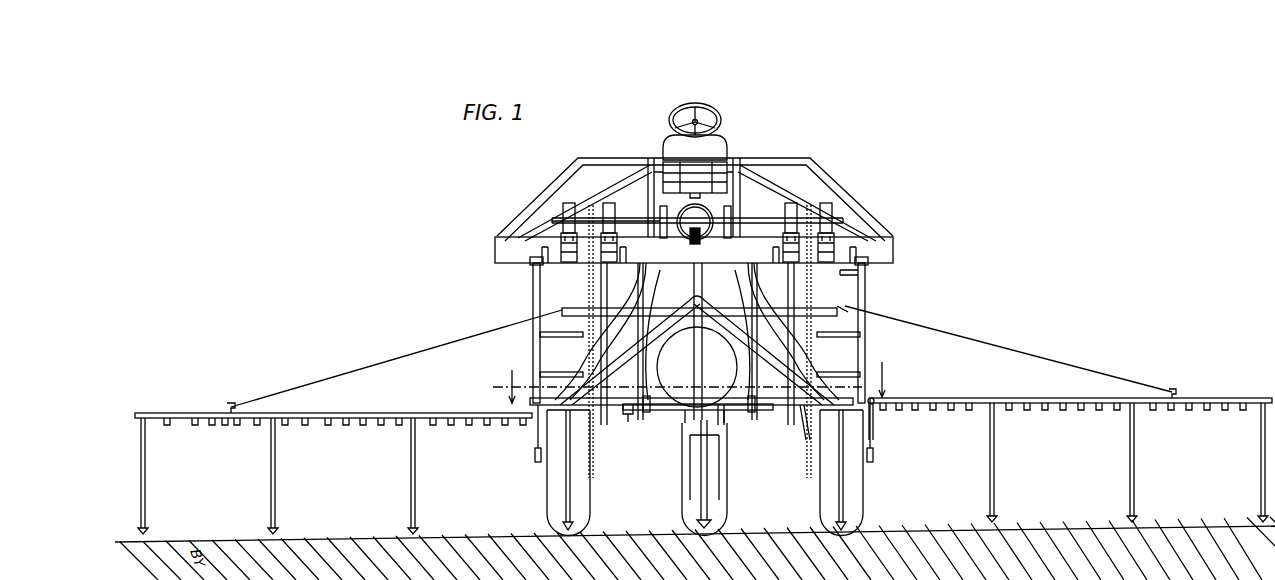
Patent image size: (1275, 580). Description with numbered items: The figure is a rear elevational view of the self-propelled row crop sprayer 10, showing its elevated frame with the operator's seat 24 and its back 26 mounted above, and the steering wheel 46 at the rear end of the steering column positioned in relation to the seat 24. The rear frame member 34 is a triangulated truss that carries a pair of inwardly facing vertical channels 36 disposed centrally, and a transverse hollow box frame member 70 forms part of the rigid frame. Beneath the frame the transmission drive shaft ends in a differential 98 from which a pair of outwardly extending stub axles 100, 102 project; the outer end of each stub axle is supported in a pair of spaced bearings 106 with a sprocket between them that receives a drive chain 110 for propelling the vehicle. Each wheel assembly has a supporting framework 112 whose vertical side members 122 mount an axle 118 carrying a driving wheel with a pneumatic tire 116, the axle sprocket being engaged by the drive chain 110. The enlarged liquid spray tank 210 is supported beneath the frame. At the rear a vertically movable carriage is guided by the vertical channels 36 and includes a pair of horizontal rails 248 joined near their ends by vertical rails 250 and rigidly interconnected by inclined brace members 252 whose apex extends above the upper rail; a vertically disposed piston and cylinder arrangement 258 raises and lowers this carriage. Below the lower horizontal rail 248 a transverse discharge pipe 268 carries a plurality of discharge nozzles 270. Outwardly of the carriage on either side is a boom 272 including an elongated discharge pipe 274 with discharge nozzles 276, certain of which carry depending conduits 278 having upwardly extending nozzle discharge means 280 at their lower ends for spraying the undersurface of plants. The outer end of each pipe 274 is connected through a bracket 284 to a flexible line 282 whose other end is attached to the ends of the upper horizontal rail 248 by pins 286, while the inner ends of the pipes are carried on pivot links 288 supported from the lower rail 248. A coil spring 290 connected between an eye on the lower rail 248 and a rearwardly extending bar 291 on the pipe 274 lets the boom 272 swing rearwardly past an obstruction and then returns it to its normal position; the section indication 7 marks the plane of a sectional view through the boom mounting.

The section line 7- 7 is at (702, 382).
The self-propelled row crop sprayer 10 is at (522, 288).
The operator's seat 24 is at (672, 193).
The back 26 is at (710, 143).
The rear frame member 34 is at (777, 175).
The vertical channels 36 is at (737, 175).
The steering wheel 46 is at (709, 106).
The transverse box frame member 70 is at (497, 257).
The differential 98 is at (685, 235).
The stub axle 100 is at (618, 216).
The stub axle 102 is at (770, 217).
The bearings 106 is at (568, 213).
The drive chain 110 is at (862, 277).
The supporting framework 112 is at (533, 349).
The pneumatic tire 116 is at (578, 537).
The axle 118 is at (537, 458).
The vertical side members 122 is at (537, 302).
The liquid spray tank 210 is at (678, 417).
The horizontal rails 248 is at (788, 312).
The vertical rails 250 is at (877, 321).
The inclined brace members 252 is at (792, 393).
The piston and cylinder arrangement 258 is at (698, 370).
The transverse discharge pipe 268 is at (725, 412).
The discharge nozzles 270 is at (627, 417).
The boom 272 is at (356, 364).
The elongated discharge pipe 274 is at (425, 412).
The discharge nozzles 276 is at (348, 422).
The depending conduits 278 is at (418, 456).
The nozzle discharge means 280 is at (416, 528).
The flexible line 282 is at (1057, 360).
The bracket 284 is at (1183, 393).
The pins 286 is at (560, 313).
The pivot links 288 is at (805, 427).
The coil spring 290 is at (873, 422).
The rearwardly extending bar 291 is at (884, 402).